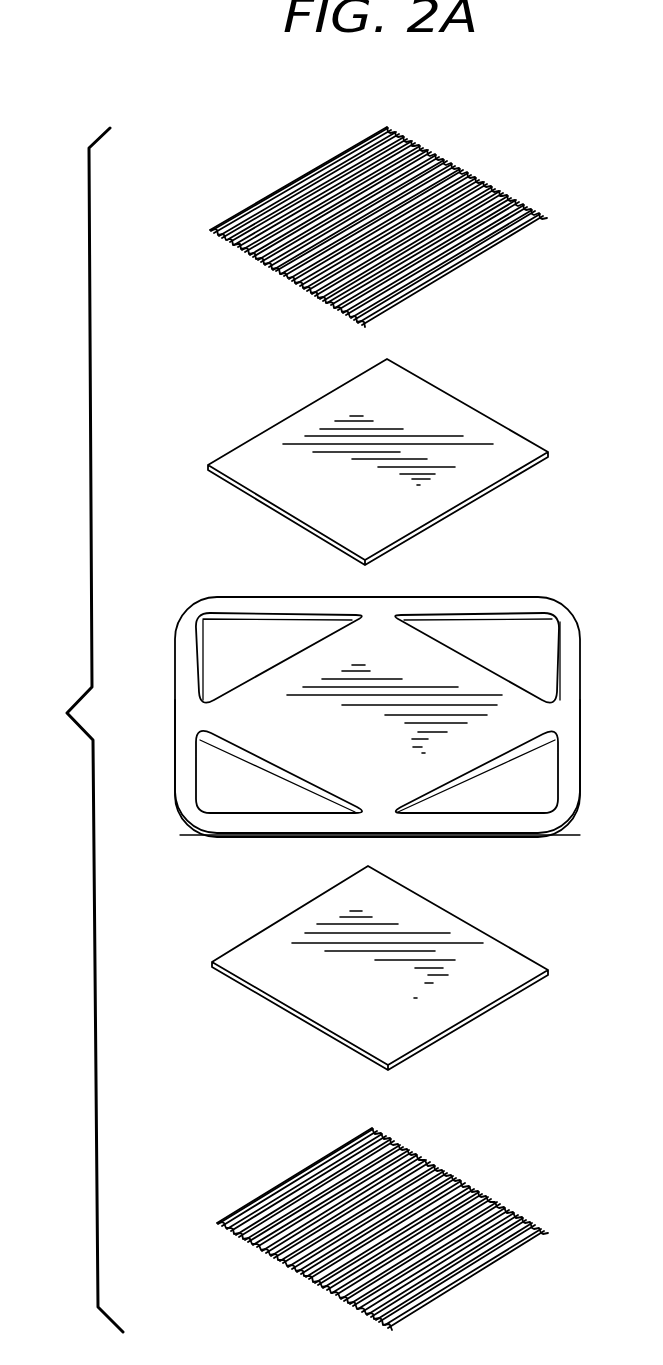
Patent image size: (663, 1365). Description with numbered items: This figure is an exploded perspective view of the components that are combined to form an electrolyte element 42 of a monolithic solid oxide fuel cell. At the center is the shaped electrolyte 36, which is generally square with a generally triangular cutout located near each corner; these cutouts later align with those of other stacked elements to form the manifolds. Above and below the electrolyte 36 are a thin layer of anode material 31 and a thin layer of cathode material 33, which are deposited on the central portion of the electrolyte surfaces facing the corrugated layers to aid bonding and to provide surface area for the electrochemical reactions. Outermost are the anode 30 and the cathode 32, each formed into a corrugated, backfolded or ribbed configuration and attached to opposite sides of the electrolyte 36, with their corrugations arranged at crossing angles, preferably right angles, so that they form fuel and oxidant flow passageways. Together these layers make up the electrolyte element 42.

The anode 30 is at (493, 213).
The thin layer of anode material 31 is at (507, 442).
The electrolyte 36 is at (472, 687).
The thin layer of cathode material 33 is at (470, 953).
The cathode 32 is at (480, 1217).
The electrolyte element 42 is at (70, 730).